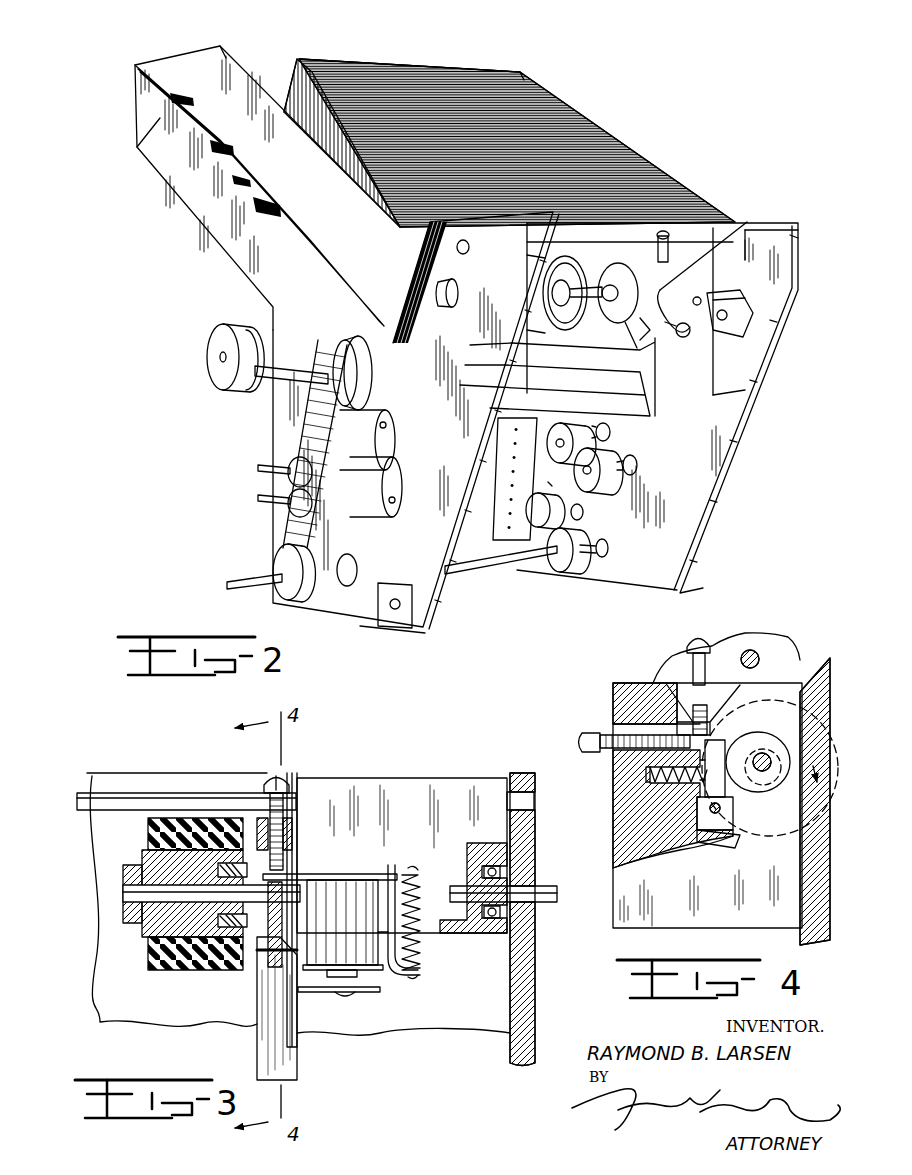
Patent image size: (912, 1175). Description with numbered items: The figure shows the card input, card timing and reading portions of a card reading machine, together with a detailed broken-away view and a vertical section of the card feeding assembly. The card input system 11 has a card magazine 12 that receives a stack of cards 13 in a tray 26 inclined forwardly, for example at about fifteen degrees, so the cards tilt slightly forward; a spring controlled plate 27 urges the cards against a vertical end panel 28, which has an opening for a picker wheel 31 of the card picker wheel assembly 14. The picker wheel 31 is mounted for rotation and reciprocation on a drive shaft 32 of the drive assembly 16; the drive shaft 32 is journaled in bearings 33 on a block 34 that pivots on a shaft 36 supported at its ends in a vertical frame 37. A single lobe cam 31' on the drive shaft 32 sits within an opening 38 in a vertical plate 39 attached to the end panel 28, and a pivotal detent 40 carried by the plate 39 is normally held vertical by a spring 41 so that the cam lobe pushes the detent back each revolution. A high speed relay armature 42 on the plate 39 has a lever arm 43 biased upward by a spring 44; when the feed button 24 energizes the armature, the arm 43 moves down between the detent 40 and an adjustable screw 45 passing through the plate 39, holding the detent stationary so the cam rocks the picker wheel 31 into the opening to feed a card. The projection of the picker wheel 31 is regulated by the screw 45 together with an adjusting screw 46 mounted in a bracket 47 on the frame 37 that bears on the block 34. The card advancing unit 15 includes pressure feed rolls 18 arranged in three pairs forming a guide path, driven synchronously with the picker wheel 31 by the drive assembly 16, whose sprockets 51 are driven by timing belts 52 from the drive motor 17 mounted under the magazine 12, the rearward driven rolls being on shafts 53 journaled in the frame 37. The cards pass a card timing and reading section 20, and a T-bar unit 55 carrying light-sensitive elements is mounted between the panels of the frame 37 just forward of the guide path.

In FIG. 2, the card input system 11 is at (182, 219).
In FIG. 2, the card magazine 12 is at (288, 38).
In FIG. 2, the stack of cards 13 is at (580, 113).
In FIG. 2, the card picker wheel assembly 14 is at (712, 273).
In FIG. 2, the card advancing unit 15 is at (632, 493).
In FIG. 2, the drive assembly 16 is at (230, 438).
In FIG. 2, the drive motor 17 is at (300, 312).
In FIG. 2, the pressure feed rolls 18 is at (575, 572).
In FIG. 2, the card timing and reading section 20 is at (505, 545).
In FIG. 2, the feed button 24 is at (668, 240).
In FIG. 3, the feed button 24 is at (270, 782).
In FIG. 4, the feed button 24 is at (704, 648).
In FIG. 2, the tray 26 is at (272, 82).
In FIG. 2, the spring controlled plate 27 is at (378, 62).
In FIG. 2, the vertical end panel 28 is at (426, 248).
In FIG. 2, the picker wheel 31 is at (625, 245).
In FIG. 3, the picker wheel 31 is at (185, 855).
In FIG. 4, the picker wheel 31 is at (830, 799).
In FIG. 2, the single lobe cam 31' is at (677, 259).
In FIG. 4, the single lobe cam 31' is at (795, 745).
In FIG. 2, the drive shaft 32 is at (612, 290).
In FIG. 3, the drive shaft 32 is at (127, 891).
In FIG. 4, the drive shaft 32 is at (770, 766).
In FIG. 3, the bearings 33 is at (500, 877).
In FIG. 2, the block 34 is at (790, 238).
In FIG. 3, the block 34 is at (450, 778).
In FIG. 2, the shaft 36 is at (597, 245).
In FIG. 3, the shaft 36 is at (172, 793).
In FIG. 4, the shaft 36 is at (755, 651).
In FIG. 2, the vertical frame 37 is at (436, 585).
In FIG. 3, the vertical frame 37 is at (514, 773).
In FIG. 4, the vertical frame 37 is at (684, 667).
In FIG. 3, the opening 38 is at (300, 873).
In FIG. 4, the opening 38 is at (705, 790).
In FIG. 2, the vertical plate 39 is at (745, 350).
In FIG. 3, the vertical plate 39 is at (298, 830).
In FIG. 4, the vertical plate 39 is at (655, 930).
In FIG. 2, the pivotal detent 40 is at (633, 335).
In FIG. 3, the pivotal detent 40 is at (262, 962).
In FIG. 4, the pivotal detent 40 is at (700, 815).
In FIG. 2, the spring 41 is at (645, 330).
In FIG. 4, the spring 41 is at (650, 774).
In FIG. 3, the high speed relay armature 42 is at (366, 962).
In FIG. 2, the lever arm 43 is at (682, 296).
In FIG. 3, the lever arm 43 is at (392, 865).
In FIG. 4, the lever arm 43 is at (705, 782).
In FIG. 3, the spring 44 is at (421, 950).
In FIG. 2, the adjustable screw 45 is at (690, 333).
In FIG. 4, the adjustable screw 45 is at (600, 733).
In FIG. 2, the adjusting screw 46 is at (702, 303).
In FIG. 2, the bracket 47 is at (752, 312).
In FIG. 2, the sprockets 51 is at (208, 355).
In FIG. 2, the timing belts 52 is at (276, 396).
In FIG. 2, the shafts 53 is at (280, 470).
In FIG. 2, the T-bar unit 55 is at (548, 482).